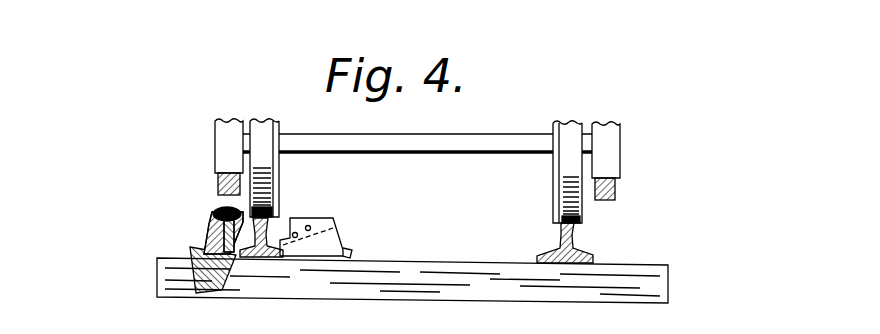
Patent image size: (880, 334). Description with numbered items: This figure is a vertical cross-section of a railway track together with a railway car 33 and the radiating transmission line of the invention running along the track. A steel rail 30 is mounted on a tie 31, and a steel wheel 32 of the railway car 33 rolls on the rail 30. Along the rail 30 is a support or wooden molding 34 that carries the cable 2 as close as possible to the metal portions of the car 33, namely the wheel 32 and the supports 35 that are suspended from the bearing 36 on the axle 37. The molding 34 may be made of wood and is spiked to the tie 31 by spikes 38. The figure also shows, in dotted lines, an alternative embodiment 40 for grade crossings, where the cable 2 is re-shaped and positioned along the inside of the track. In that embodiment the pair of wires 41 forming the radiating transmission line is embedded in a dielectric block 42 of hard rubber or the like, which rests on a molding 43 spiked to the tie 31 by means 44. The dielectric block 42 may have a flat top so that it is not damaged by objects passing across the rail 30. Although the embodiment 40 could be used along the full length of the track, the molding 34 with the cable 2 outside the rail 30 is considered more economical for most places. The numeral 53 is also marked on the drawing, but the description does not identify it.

The cable 2 is at (221, 207).
The steel rail 30 is at (257, 258).
The tie 31 is at (312, 297).
The steel wheel 32 is at (279, 182).
The railway car 33 is at (419, 131).
The support or wooden molding 34 is at (210, 228).
The supports 35 is at (217, 182).
The bearing 36 is at (222, 143).
The axle 37 is at (398, 155).
The spikes 38 is at (203, 293).
The grade-crossing embodiment 40 is at (329, 214).
The pair of wires 41 is at (309, 225).
The dielectric block 42 is at (296, 232).
The molding 43 is at (346, 232).
The spiking means 44 is at (349, 254).
The bolt 53 is at (213, 216).